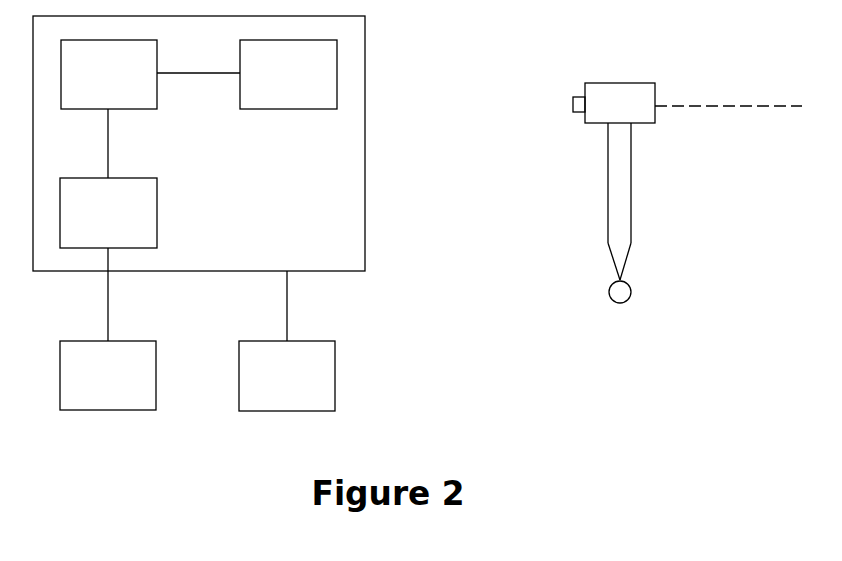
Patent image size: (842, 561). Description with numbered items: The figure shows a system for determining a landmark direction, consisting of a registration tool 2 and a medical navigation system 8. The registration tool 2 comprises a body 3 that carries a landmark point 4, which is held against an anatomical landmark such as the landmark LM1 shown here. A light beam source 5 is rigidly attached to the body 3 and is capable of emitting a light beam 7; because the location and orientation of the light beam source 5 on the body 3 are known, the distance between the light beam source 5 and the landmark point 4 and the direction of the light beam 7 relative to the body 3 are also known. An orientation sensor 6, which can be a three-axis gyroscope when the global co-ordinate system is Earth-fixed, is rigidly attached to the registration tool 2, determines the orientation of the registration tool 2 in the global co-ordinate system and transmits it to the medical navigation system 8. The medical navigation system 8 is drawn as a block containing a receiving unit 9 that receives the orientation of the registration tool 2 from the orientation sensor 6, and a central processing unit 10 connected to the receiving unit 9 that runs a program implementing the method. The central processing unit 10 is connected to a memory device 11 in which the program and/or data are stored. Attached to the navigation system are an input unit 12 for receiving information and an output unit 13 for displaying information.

The registration tool 2 is at (614, 188).
The body 3 is at (608, 188).
The landmark point 4 is at (619, 283).
The light beam source 5 is at (630, 83).
The orientation sensor 6 is at (573, 100).
The light beam 7 is at (718, 106).
The medical navigation system 8 is at (365, 82).
The receiving unit 9 is at (101, 223).
The central processing unit 10 is at (96, 85).
The memory device 11 is at (276, 85).
The input unit 12 is at (96, 385).
The output unit 13 is at (275, 386).
The landmark LM1 is at (613, 302).